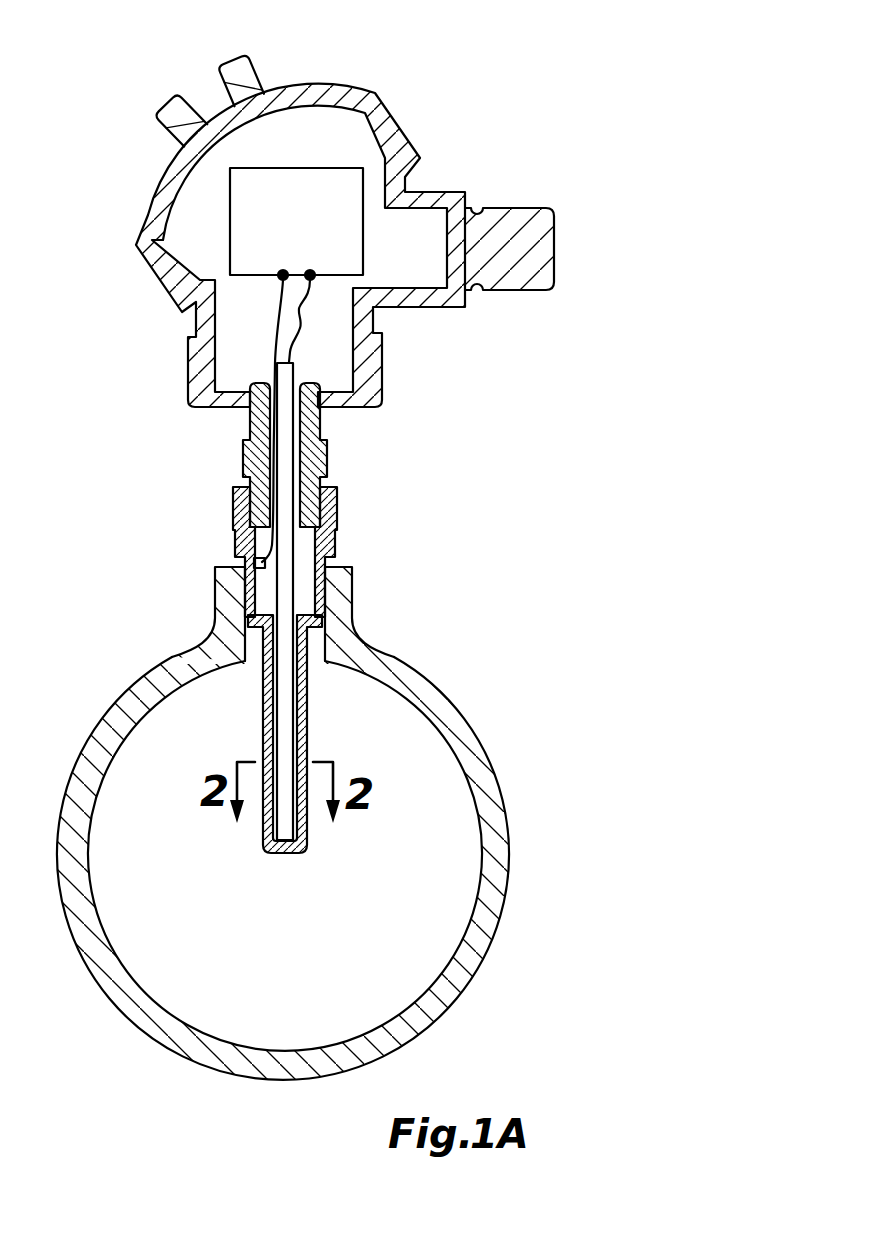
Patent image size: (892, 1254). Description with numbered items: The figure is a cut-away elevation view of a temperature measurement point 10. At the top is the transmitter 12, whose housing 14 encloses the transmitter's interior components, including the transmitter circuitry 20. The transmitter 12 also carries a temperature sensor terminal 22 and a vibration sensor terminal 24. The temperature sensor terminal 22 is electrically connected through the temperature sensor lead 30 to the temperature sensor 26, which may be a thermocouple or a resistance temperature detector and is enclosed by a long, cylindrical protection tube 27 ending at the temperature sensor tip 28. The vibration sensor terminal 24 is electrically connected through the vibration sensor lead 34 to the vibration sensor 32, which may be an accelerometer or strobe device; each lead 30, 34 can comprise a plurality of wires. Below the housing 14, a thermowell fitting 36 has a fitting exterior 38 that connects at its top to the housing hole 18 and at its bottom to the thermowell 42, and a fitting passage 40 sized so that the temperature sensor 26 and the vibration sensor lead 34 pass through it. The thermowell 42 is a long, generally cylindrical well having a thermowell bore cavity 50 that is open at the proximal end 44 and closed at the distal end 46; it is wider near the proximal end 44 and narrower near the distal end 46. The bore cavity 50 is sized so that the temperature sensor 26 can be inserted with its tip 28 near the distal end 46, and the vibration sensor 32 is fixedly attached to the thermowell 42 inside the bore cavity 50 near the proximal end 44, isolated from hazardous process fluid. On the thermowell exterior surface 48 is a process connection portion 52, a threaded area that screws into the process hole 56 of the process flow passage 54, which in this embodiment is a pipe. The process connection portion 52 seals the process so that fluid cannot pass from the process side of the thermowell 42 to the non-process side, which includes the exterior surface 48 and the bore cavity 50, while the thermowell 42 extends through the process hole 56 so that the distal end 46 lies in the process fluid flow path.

The temperature measurement point 10 is at (495, 108).
The transmitter 12 is at (333, 86).
The housing 14 is at (398, 130).
The housing hole 18 is at (250, 383).
The transmitter circuitry 20 is at (229, 194).
The temperature sensor terminal 22 is at (311, 272).
The vibration sensor terminal 24 is at (282, 272).
The temperature sensor 26 is at (292, 372).
The protection tube 27 is at (307, 590).
The temperature sensor tip 28 is at (290, 855).
The temperature sensor lead 30 is at (307, 297).
The vibration sensor 32 is at (258, 562).
The vibration sensor lead 34 is at (280, 290).
The thermowell fitting 36 is at (322, 447).
The fitting exterior 38 is at (250, 418).
The fitting passage 40 is at (275, 433).
The thermowell 42 is at (336, 503).
The proximal end 44 is at (323, 480).
The distal end 46 is at (267, 852).
The thermowell exterior surface 48 is at (335, 525).
The thermowell bore cavity 50 is at (307, 542).
The process connection portion 52 is at (246, 597).
The process flow passage 54 is at (463, 714).
The process hole 56 is at (216, 638).